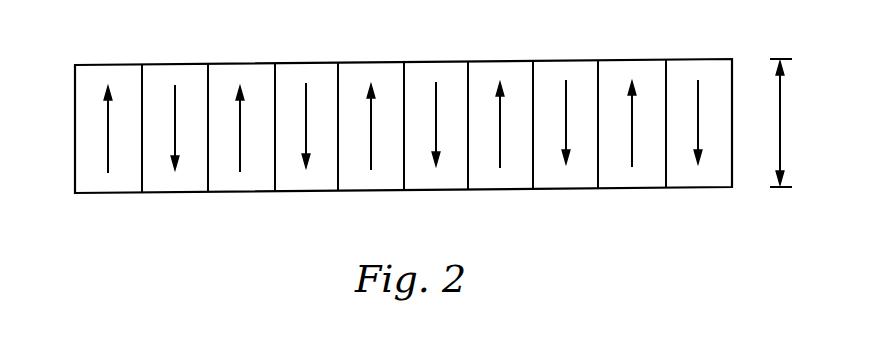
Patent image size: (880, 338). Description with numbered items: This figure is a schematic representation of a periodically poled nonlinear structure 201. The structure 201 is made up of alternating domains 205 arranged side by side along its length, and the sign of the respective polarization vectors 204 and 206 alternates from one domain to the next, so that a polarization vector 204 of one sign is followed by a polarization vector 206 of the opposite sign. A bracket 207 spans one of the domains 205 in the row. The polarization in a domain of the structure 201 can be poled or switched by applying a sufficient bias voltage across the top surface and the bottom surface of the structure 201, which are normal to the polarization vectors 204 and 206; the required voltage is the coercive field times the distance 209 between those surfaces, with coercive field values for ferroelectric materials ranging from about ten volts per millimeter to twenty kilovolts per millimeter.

The periodically poled nonlinear structure 201 is at (170, 64).
The polarization vector 204 is at (108, 138).
The domain 205 is at (117, 185).
The polarization vector 206 is at (178, 103).
The domain width 207 is at (404, 62).
The distance 209 is at (782, 118).